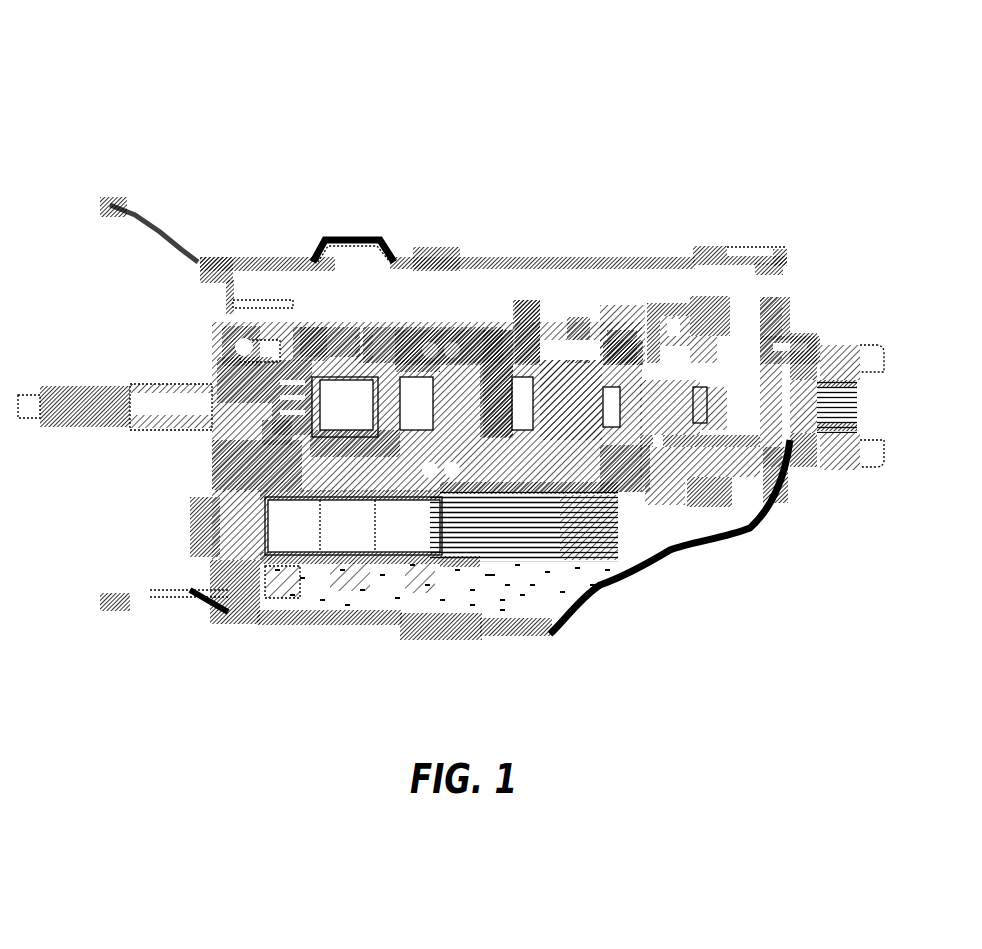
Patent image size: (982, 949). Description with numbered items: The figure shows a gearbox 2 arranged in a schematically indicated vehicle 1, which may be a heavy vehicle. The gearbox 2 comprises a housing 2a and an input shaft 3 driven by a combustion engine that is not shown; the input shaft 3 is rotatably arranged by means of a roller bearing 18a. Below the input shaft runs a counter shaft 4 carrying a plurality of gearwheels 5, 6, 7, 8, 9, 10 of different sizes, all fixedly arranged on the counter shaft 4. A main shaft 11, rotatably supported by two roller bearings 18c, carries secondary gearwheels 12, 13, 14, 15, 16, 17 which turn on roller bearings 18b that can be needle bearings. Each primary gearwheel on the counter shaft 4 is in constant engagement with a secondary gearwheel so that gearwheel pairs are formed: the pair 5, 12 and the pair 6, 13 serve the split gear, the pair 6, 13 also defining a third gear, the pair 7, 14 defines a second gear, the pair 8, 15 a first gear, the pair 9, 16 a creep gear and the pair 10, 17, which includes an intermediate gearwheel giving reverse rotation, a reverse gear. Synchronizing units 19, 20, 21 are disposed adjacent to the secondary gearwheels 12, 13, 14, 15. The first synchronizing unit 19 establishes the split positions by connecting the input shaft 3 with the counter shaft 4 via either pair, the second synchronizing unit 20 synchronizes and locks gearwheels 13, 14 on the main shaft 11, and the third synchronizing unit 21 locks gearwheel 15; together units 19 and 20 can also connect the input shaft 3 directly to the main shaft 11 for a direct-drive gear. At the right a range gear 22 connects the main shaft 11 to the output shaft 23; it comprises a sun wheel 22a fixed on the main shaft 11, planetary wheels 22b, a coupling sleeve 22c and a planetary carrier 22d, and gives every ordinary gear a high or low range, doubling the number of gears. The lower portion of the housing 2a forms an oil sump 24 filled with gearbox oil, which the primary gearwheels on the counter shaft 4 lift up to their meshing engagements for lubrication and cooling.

The vehicle 1 is at (190, 140).
The gearbox 2 is at (738, 208).
The housing 2a is at (655, 258).
The input shaft 3 is at (107, 390).
The counter shaft 4 is at (353, 526).
The gearwheel 5 is at (280, 583).
The gearwheel 6 is at (343, 583).
The gearwheel 7 is at (418, 575).
The gearwheel 8 is at (445, 535).
The gearwheel 9 is at (515, 525).
The gearwheel 10 is at (568, 535).
The main shaft 11 is at (345, 407).
The gearwheel 12 is at (277, 360).
The gearwheel 13 is at (337, 330).
The gearwheel 14 is at (410, 330).
The gearwheel 15 is at (458, 325).
The gearwheel 16 is at (540, 300).
The gearwheel 17 is at (592, 330).
The roller bearing 18a is at (245, 356).
The roller bearings 18b is at (413, 368).
The roller bearings 18c is at (612, 352).
The first synchronizing unit 19 is at (305, 335).
The second synchronizing unit 20 is at (366, 325).
The third synchronizing unit 21 is at (508, 325).
The range gear 22 is at (665, 460).
The sun wheel 22a is at (690, 430).
The planetary wheels 22b is at (680, 490).
The coupling sleeve 22c is at (663, 500).
The planetary carrier 22d is at (693, 334).
The output shaft 23 is at (813, 400).
The oil sump 24 is at (508, 587).